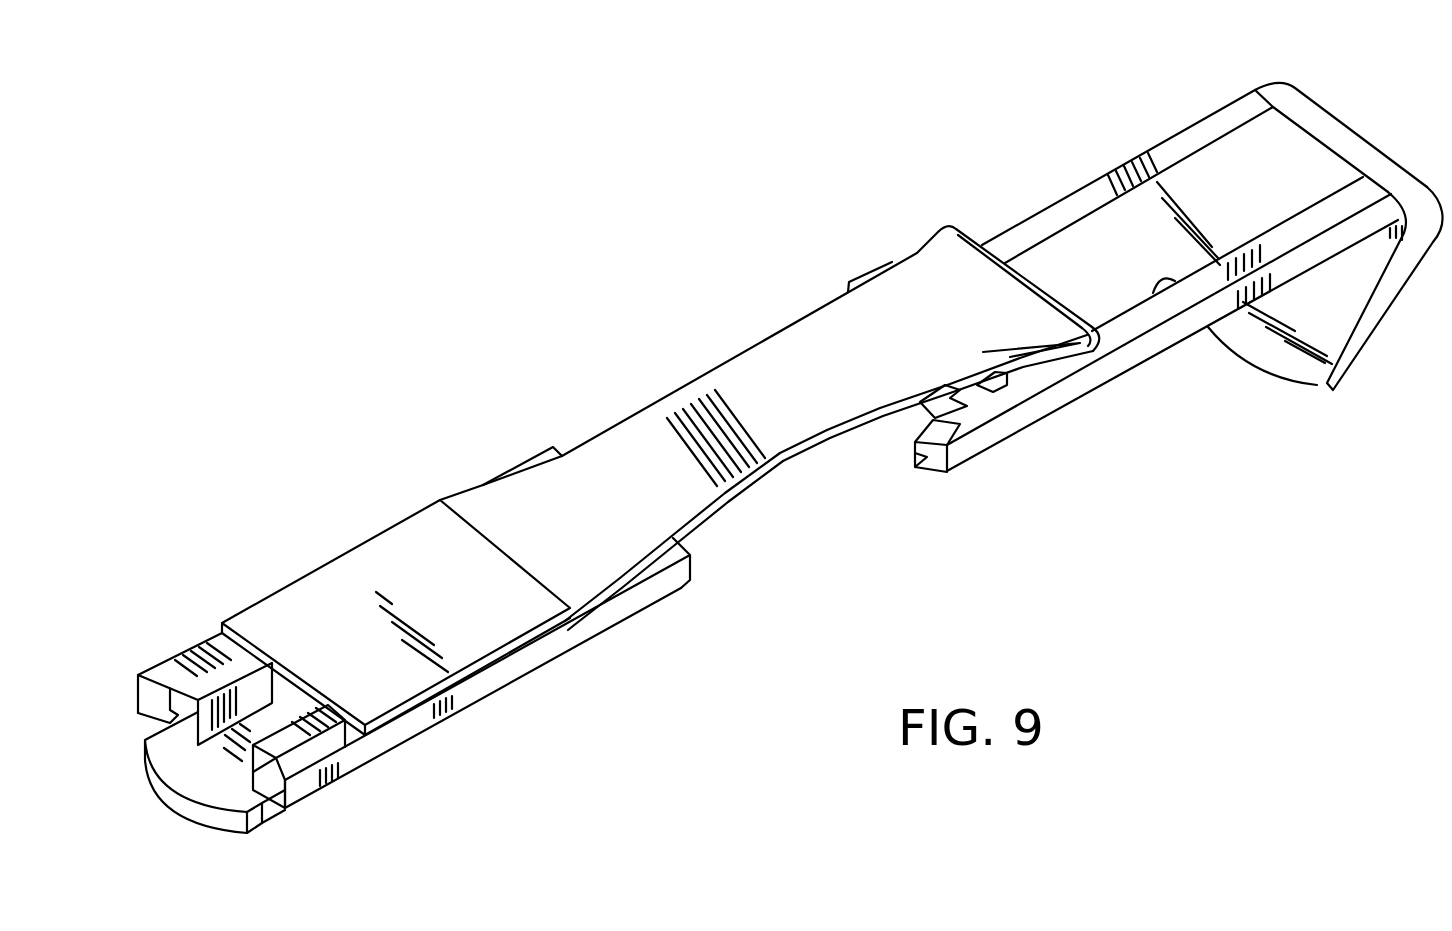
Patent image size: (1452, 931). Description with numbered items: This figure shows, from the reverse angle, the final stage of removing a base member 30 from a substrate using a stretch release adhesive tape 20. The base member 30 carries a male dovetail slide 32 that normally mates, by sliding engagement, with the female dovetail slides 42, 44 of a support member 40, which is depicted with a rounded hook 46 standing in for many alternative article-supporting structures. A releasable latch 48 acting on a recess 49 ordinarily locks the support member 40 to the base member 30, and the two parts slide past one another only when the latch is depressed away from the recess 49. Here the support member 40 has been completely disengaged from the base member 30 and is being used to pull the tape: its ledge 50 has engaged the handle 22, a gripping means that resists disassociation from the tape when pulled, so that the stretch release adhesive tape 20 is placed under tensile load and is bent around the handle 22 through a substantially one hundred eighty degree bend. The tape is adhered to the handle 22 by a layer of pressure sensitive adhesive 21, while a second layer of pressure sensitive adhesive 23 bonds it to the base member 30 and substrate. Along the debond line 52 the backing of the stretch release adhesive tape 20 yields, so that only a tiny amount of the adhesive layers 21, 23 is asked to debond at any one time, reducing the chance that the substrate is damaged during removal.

The stretch release adhesive tape 20 is at (769, 428).
The layer of pressure sensitive adhesive 21 is at (790, 456).
The handle 22 is at (1007, 382).
The second layer of pressure sensitive adhesive 23 is at (746, 382).
The base member 30 is at (665, 553).
The male dovetail slide 32 is at (428, 722).
The support member 40 is at (1195, 244).
The female dovetail slide 42 is at (1156, 284).
The female dovetail slide 44 is at (1097, 202).
The rounded hook 46 is at (1310, 312).
The releasable latch 48 is at (215, 772).
The recess 49 is at (923, 407).
The ledge 50 is at (947, 415).
The debond line 52 is at (475, 528).